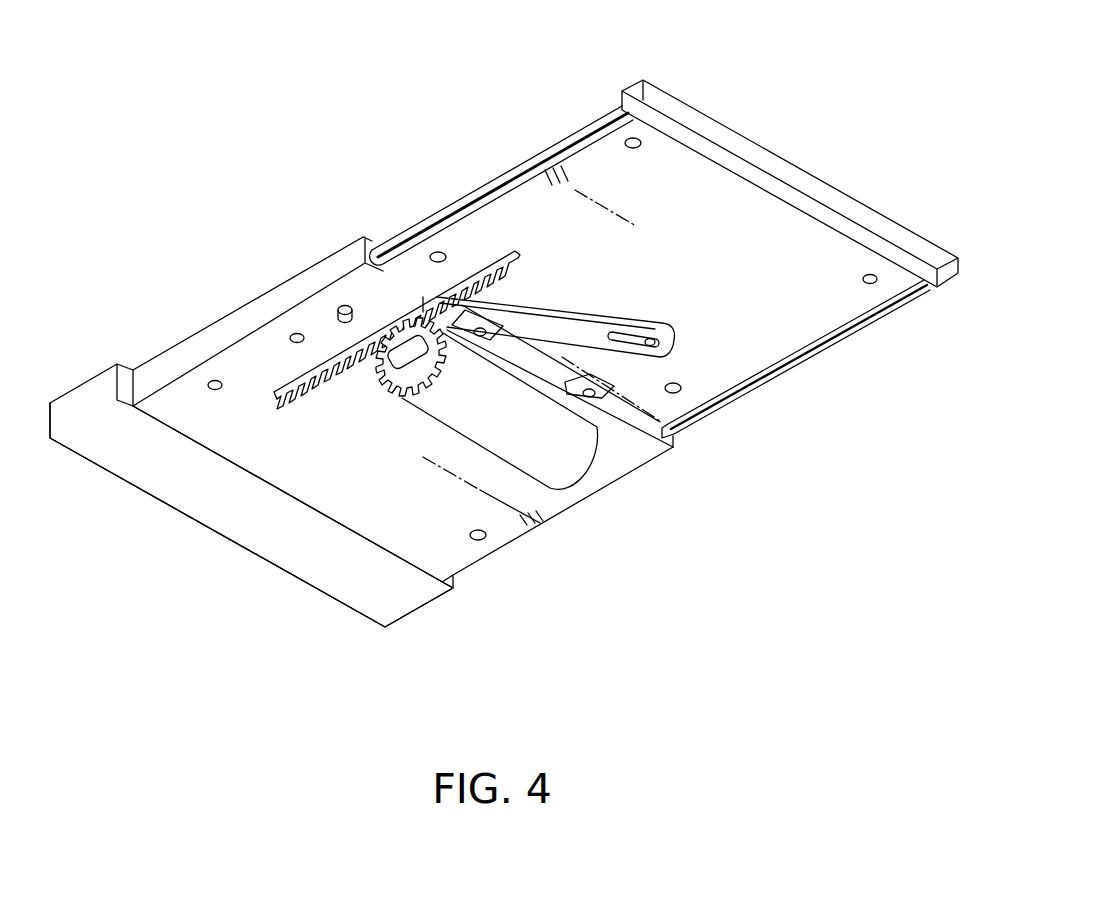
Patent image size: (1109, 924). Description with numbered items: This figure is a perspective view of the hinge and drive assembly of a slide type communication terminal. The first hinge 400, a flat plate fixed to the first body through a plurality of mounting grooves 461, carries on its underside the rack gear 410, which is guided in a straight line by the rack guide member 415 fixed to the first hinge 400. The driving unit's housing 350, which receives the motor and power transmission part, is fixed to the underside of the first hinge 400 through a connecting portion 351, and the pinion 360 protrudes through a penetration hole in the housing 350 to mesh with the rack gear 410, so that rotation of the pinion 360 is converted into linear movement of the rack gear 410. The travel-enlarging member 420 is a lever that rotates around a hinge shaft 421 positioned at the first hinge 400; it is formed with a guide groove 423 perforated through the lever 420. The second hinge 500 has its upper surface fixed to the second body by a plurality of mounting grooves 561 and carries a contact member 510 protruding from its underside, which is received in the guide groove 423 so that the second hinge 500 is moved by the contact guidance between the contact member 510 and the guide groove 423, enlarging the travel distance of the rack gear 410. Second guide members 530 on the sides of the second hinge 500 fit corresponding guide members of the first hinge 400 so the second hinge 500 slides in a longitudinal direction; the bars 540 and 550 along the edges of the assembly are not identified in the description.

The housing 350 is at (567, 478).
The connecting portion 351 is at (592, 402).
The pinion 360 is at (380, 378).
The first hinge 400 is at (508, 527).
The rack gear 410 is at (307, 367).
The rack guide member 415 is at (273, 387).
The travel-enlarging member 420 is at (558, 310).
The hinge shaft 421 is at (344, 306).
The guide groove 423 is at (623, 341).
The mounting grooves 461 is at (205, 383).
The second hinge 500 is at (820, 313).
The contact member 510 is at (657, 341).
The second guide members 530 is at (568, 135).
The front bar 540 is at (352, 593).
The rear bar 550 is at (797, 172).
The mounting grooves 561 is at (875, 283).